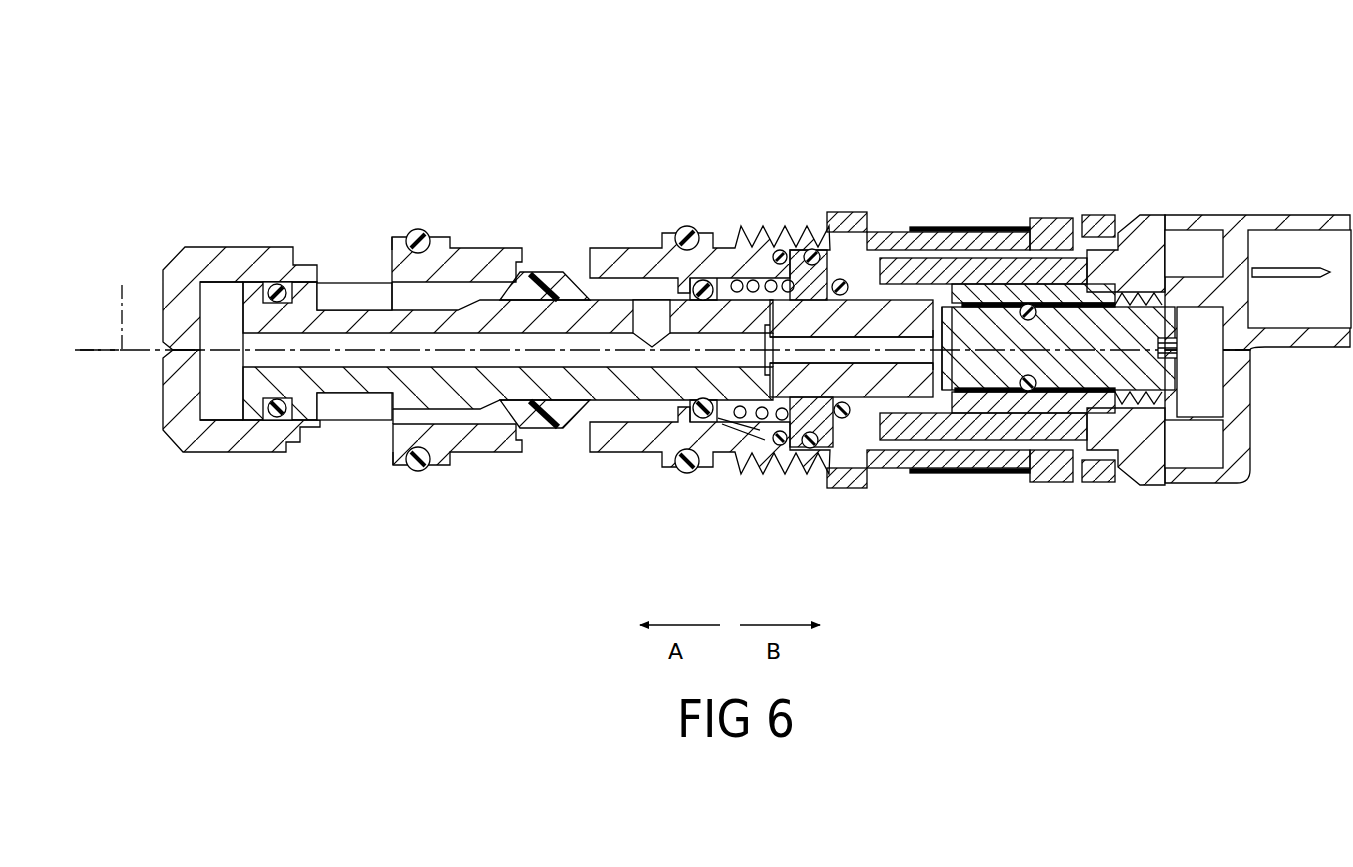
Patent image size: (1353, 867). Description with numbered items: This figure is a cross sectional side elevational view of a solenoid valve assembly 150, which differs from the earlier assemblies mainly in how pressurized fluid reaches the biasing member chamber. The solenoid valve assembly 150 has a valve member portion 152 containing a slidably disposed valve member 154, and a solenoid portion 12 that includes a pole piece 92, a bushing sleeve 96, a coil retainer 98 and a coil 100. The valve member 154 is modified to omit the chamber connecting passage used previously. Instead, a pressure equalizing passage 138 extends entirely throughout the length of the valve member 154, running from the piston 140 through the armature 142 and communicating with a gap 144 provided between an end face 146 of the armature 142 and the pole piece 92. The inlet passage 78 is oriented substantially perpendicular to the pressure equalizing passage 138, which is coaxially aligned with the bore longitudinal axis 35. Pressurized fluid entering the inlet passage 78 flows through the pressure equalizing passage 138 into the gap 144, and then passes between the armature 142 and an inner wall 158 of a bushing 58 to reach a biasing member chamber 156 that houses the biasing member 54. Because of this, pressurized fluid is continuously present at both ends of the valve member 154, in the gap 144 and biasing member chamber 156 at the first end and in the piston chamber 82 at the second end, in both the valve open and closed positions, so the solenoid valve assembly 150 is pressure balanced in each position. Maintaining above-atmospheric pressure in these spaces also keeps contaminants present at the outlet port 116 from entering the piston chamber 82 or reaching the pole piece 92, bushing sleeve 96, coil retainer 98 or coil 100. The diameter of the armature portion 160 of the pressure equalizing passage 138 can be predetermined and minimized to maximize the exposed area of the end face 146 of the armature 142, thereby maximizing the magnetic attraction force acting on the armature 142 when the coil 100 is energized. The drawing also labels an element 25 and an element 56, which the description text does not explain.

The solenoid valve assembly 150 is at (848, 136).
The bore longitudinal axis 35 is at (122, 285).
The valve member portion 152 is at (272, 478).
The piston chamber 82 is at (212, 367).
The piston 140 is at (258, 402).
The pressure equalizing passage 138 is at (364, 360).
The outlet port 116 is at (360, 297).
The valve member 154 is at (472, 440).
The outer body 25 is at (393, 455).
The inlet passage 78 is at (647, 310).
The seal 56 is at (720, 420).
The biasing member 54 is at (762, 432).
The biasing member chamber 156 is at (758, 440).
The inner wall 158 is at (848, 442).
The bushing 58 is at (823, 240).
The solenoid portion 12 is at (1000, 230).
The armature 142 is at (890, 380).
The armature portion 160 is at (878, 342).
The coil retainer 98 is at (1015, 400).
The bushing sleeve 96 is at (922, 440).
The gap 144 is at (960, 440).
The end face 146 is at (1028, 225).
The coil 100 is at (1055, 240).
The pole piece 92 is at (1080, 470).